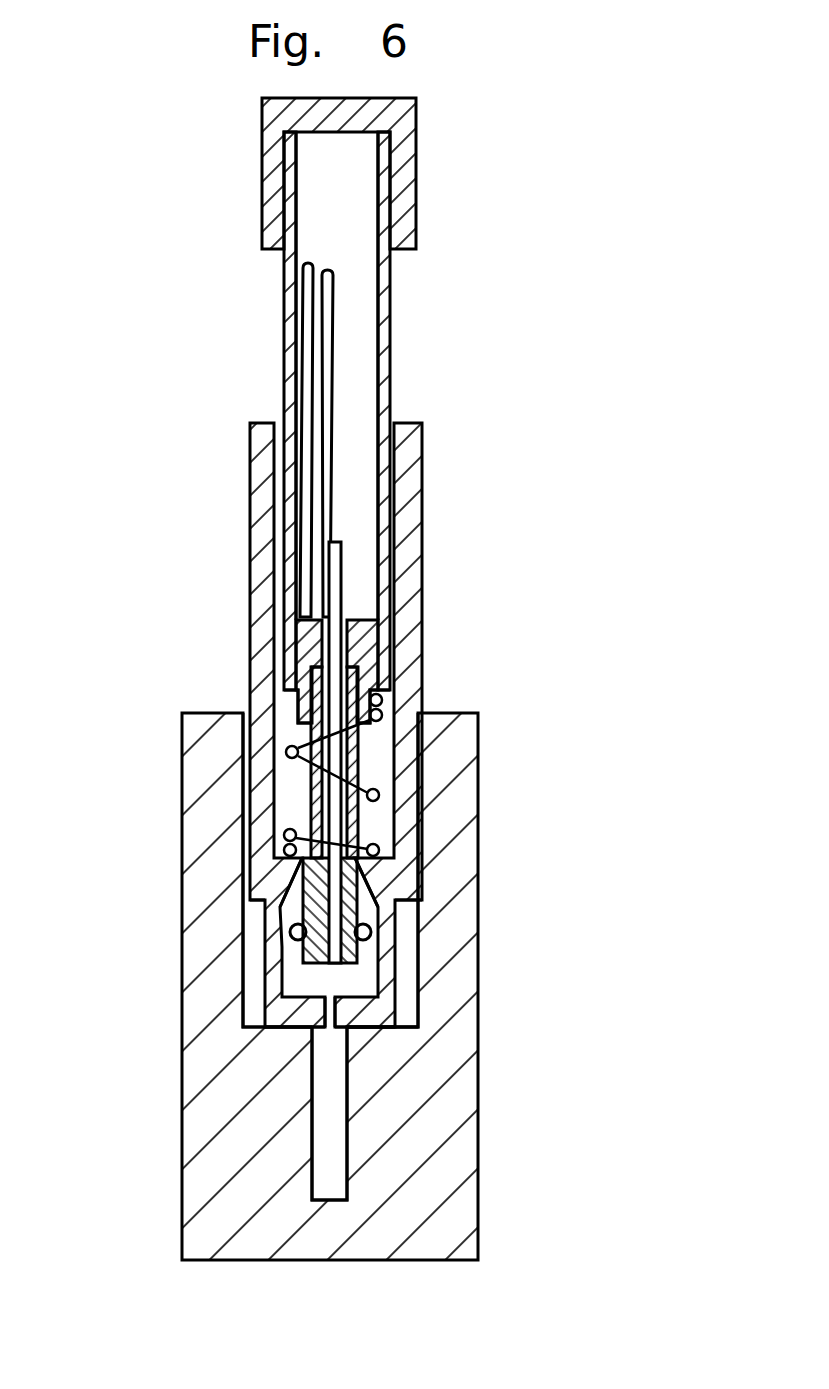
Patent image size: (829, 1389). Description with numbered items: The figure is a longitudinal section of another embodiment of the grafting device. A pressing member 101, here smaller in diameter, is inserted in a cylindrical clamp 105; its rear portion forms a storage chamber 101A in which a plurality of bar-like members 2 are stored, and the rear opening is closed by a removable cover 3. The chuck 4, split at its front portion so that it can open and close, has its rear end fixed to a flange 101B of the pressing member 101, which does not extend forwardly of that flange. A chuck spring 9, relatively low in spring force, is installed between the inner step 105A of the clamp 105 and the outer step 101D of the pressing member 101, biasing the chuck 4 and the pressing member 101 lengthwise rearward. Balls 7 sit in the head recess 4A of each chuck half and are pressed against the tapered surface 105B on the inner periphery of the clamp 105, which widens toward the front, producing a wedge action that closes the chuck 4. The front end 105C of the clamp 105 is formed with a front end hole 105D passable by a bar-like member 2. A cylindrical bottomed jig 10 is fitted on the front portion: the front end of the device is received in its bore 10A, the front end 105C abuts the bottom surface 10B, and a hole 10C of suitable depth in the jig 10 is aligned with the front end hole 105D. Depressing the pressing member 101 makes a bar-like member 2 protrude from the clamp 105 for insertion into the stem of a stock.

The bar-like members 2 is at (327, 358).
The removable cover 3 is at (417, 133).
The chuck 4 is at (357, 755).
The head recess 4A is at (370, 937).
The balls 7 is at (373, 930).
The chuck spring 9 is at (290, 765).
The jig 10 is at (452, 1172).
The bore 10A is at (422, 975).
The bottom surface 10B is at (400, 1027).
The hole 10C is at (318, 1152).
The pressing member 101 is at (388, 296).
The storage chamber 101A is at (355, 377).
The flange 101B is at (350, 637).
The outer step 101D is at (283, 685).
The clamp 105 is at (400, 820).
The inner step 105A is at (276, 870).
The tapered surface 105B is at (283, 905).
The front end 105C is at (290, 1020).
The front end hole 105D is at (330, 1010).